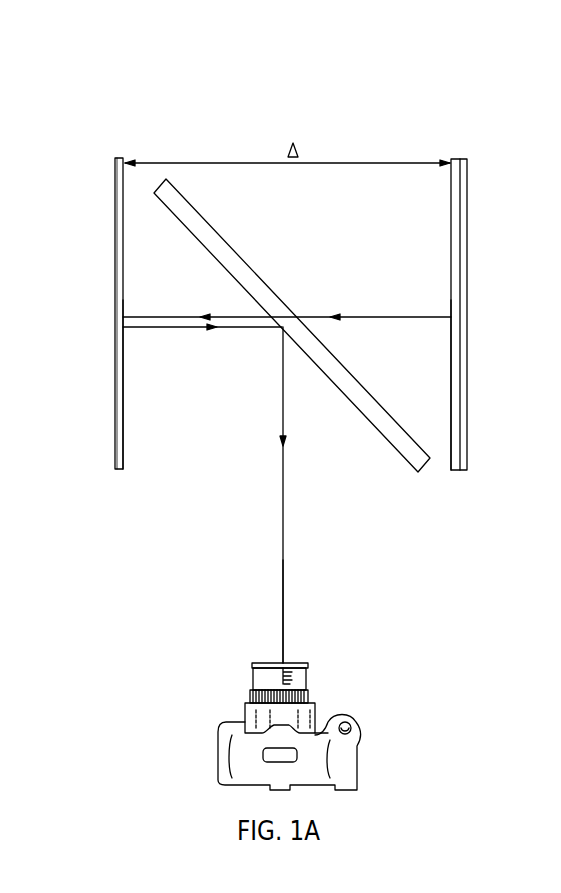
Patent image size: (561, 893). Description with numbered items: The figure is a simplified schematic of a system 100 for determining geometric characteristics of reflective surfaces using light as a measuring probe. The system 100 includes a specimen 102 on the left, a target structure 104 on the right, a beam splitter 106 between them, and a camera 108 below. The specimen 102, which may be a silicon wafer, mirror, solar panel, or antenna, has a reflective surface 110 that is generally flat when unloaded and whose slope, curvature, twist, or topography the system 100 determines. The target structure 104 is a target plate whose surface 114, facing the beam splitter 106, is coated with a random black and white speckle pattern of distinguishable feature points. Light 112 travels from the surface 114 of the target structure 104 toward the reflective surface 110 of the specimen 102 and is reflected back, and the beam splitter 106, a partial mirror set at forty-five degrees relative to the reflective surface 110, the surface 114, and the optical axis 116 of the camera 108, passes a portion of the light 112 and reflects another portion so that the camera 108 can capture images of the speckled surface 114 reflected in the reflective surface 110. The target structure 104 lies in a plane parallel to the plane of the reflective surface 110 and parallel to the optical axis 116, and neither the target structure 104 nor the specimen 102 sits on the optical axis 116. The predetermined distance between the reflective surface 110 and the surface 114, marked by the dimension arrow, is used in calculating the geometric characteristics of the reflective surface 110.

The system 100 is at (78, 138).
The specimen 102 is at (114, 259).
The target structure 104 is at (467, 238).
The beam splitter 106 is at (237, 250).
The camera 108 is at (370, 735).
The reflective surface 110 is at (123, 410).
The light 112 is at (355, 316).
The surface 114 is at (452, 363).
The optical axis 116 is at (283, 602).